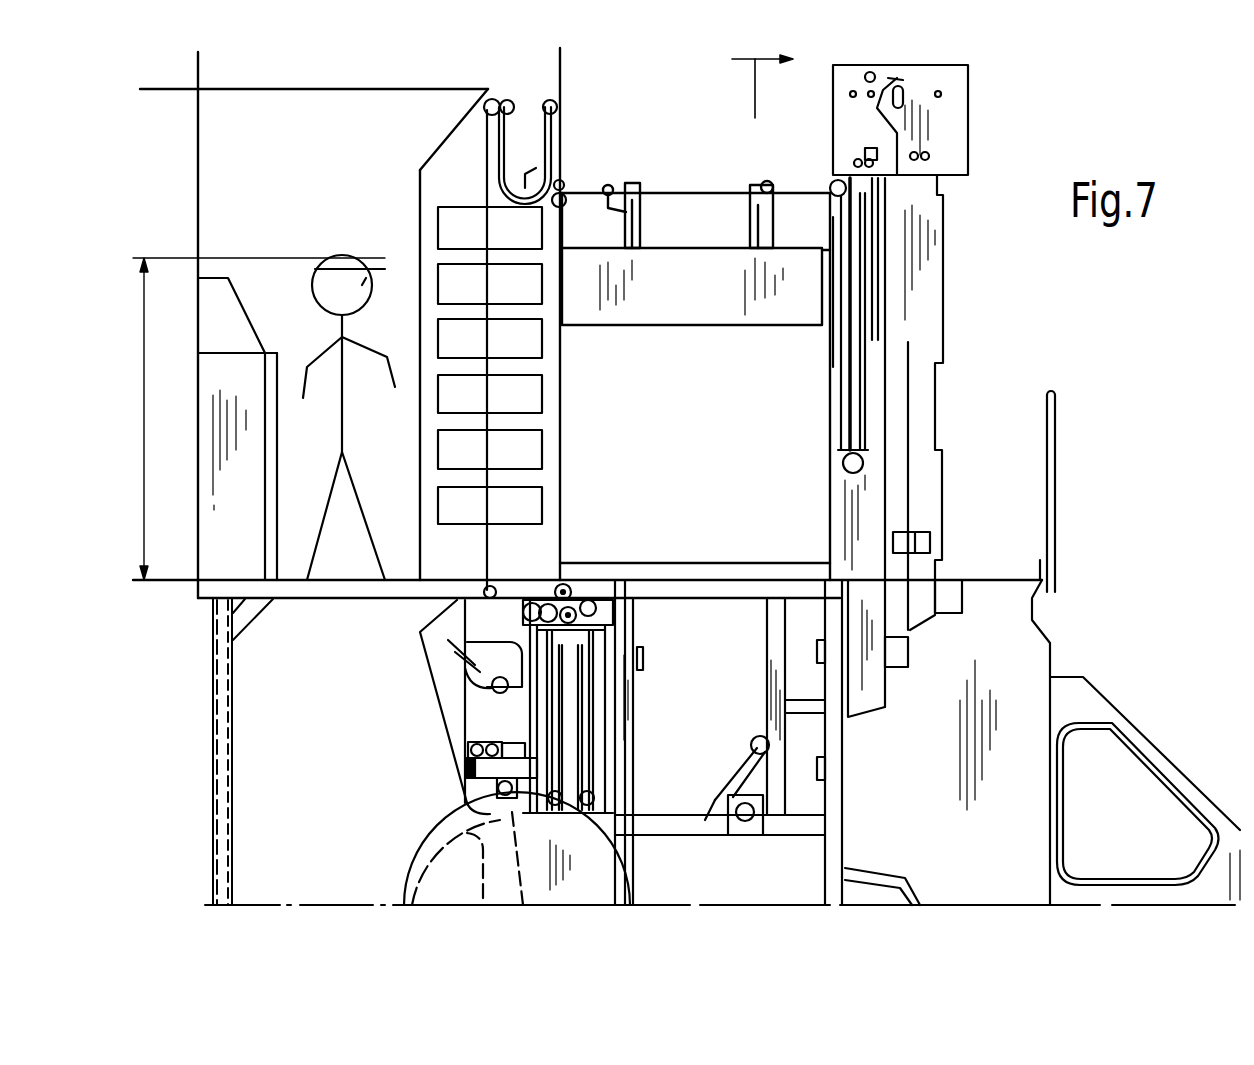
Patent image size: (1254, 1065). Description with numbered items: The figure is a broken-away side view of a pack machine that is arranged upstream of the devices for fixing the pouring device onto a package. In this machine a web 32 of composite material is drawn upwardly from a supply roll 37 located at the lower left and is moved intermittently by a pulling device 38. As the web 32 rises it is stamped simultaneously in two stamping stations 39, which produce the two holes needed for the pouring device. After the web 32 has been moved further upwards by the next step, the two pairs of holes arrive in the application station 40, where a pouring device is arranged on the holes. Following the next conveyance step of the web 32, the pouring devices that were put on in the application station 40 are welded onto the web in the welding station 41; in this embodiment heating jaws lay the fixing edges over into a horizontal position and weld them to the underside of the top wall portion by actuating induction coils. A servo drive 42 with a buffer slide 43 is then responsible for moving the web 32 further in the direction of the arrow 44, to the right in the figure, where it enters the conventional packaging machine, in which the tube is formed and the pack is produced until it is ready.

The web 32 is at (705, 192).
The supply roll 37 is at (450, 865).
The pulling device 38 is at (497, 586).
The stamping stations 39 is at (530, 450).
The application station 40 is at (527, 340).
The welding station 41 is at (448, 223).
The servo drive 42 is at (514, 104).
The buffer slide 43 is at (527, 178).
The arrow 44 is at (762, 102).